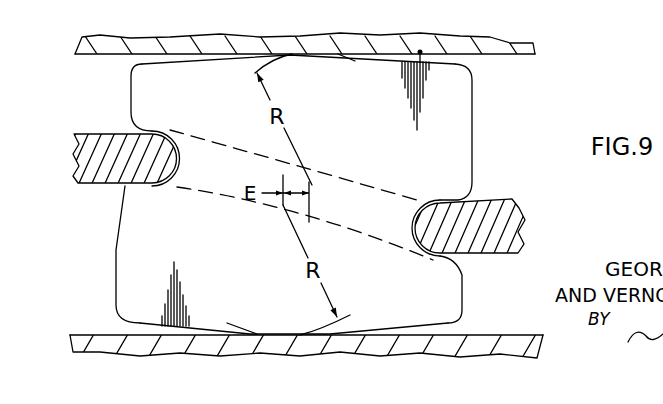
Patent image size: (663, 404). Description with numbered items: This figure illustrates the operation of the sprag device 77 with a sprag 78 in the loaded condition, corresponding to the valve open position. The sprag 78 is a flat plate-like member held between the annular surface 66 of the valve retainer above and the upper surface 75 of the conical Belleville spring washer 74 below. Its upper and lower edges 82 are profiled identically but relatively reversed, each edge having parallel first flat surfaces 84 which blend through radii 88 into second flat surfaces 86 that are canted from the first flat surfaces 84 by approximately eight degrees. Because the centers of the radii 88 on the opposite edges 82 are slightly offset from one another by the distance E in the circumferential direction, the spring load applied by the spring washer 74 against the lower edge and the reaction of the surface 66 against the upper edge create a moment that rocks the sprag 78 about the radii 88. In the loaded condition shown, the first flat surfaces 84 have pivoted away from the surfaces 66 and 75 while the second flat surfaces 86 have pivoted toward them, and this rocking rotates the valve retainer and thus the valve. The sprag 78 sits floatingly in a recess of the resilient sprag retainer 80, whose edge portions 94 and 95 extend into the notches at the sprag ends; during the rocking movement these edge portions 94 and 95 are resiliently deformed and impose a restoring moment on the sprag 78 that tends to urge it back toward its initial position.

The annular surface 66 is at (523, 56).
The conical Belleville spring washer 74 is at (494, 336).
The upper surface of the spring washer 75 is at (100, 343).
The sprag device 77 is at (511, 144).
The sprag 78 is at (466, 124).
The sprag retainer 80 is at (510, 218).
The upper and lower edges 82 is at (421, 50).
The first flat surfaces 84 is at (455, 63).
The second flat surfaces 86 is at (150, 66).
The radii 88 is at (327, 58).
The side of recess 94 is at (162, 167).
The side of recess 95 is at (432, 224).